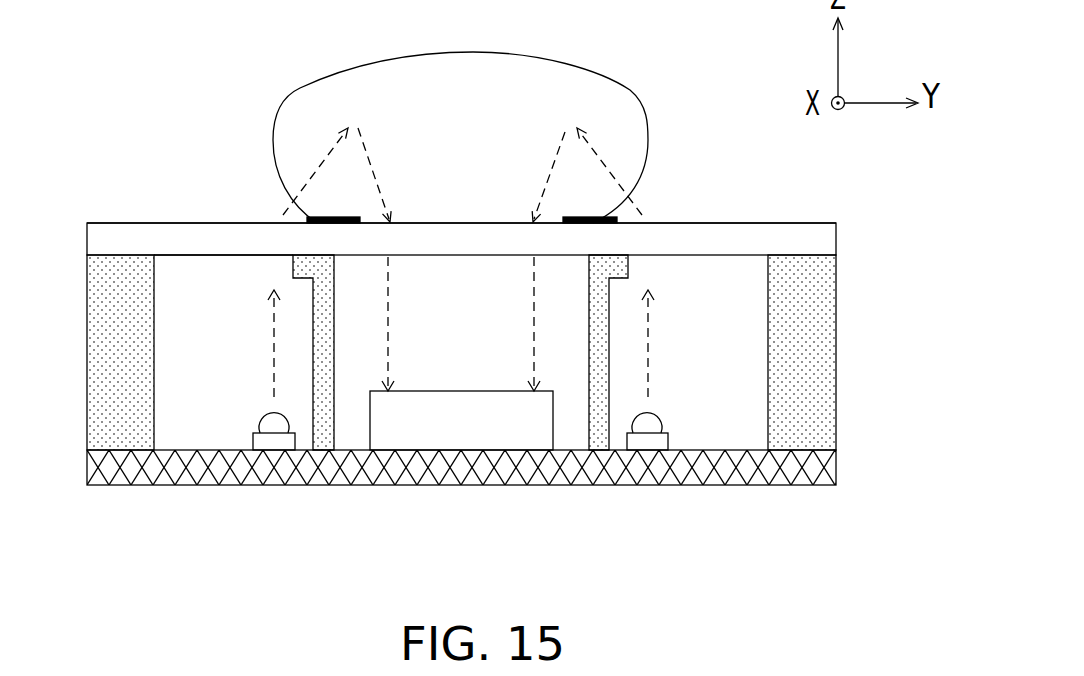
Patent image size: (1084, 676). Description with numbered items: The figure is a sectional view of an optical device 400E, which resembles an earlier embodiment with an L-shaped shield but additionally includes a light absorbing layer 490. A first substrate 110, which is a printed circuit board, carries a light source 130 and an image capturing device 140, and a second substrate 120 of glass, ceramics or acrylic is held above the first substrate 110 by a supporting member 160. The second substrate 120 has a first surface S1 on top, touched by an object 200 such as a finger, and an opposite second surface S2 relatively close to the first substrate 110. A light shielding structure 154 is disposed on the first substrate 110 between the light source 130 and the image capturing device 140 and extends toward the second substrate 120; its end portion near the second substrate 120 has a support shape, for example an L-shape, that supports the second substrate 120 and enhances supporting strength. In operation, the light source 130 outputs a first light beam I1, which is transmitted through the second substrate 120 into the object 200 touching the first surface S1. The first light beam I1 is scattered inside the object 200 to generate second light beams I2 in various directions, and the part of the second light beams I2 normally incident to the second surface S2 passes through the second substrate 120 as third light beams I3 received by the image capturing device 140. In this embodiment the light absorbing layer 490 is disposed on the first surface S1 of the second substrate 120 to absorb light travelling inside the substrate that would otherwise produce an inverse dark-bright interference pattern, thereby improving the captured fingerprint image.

The optical device 400E is at (157, 130).
The first substrate 110 is at (820, 465).
The second substrate 120 is at (822, 238).
The light source 130 is at (648, 437).
The image capturing device 140 is at (447, 430).
The light shielding structure 154 is at (325, 435).
The supporting member 160 is at (126, 432).
The object 200 is at (648, 140).
The light absorbing layer 490 is at (592, 221).
The first surface S1 is at (190, 222).
The second surface S2 is at (198, 257).
The first light beam I1 is at (648, 333).
The second light beams I2 is at (557, 158).
The third light beams I3 is at (534, 323).